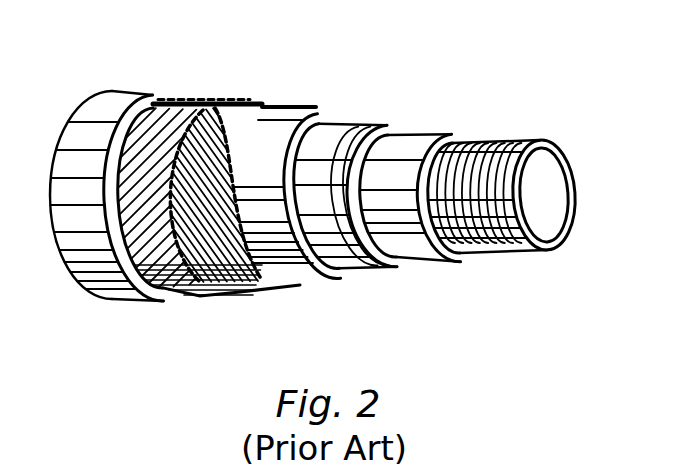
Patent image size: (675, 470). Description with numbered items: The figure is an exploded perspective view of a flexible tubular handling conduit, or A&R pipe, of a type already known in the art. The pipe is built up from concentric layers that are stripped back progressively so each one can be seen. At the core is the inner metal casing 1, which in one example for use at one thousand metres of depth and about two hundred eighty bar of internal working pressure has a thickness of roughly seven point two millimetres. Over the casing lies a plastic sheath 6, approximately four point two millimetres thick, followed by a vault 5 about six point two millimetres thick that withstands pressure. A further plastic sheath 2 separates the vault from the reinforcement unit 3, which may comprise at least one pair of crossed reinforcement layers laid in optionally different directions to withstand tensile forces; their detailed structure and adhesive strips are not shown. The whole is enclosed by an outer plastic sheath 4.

The inner metal casing 1 is at (498, 146).
The plastic sheath 2 is at (287, 254).
The reinforcement unit 3 is at (228, 256).
The outer plastic sheath 4 is at (122, 284).
The vault 5 is at (347, 130).
The plastic sheath 6 is at (414, 148).